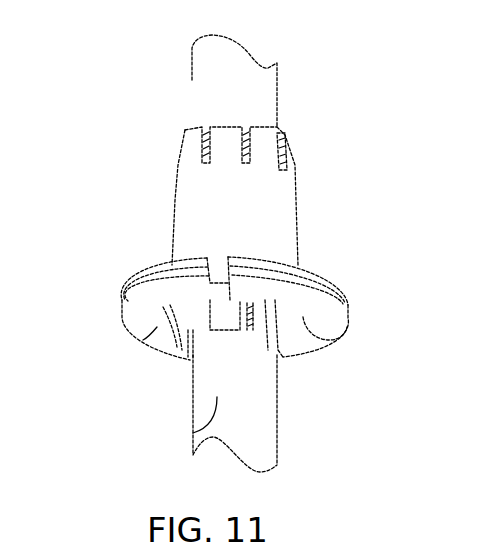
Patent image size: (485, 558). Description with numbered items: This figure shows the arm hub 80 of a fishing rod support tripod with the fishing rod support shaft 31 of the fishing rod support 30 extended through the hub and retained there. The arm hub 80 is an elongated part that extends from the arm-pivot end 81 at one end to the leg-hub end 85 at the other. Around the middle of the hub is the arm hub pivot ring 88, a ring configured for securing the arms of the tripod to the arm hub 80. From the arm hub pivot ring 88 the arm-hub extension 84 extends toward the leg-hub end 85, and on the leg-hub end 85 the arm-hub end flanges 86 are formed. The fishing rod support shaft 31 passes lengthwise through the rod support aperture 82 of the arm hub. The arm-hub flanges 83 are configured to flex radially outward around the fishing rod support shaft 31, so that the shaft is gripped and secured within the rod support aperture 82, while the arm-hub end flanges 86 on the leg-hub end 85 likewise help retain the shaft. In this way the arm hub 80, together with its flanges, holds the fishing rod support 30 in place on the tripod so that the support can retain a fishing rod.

The fishing rod support 30 is at (193, 433).
The fishing rod support shaft 31 is at (267, 398).
The arm hub 80 is at (163, 293).
The arm-pivot end 81 is at (188, 360).
The rod support aperture 82 is at (273, 368).
The arm-hub flanges 83 is at (267, 319).
The arm-hub extension 84 is at (205, 202).
The leg-hub end 85 is at (192, 130).
The arm-hub end flanges 86 is at (268, 150).
The arm hub pivot ring 88 is at (145, 325).